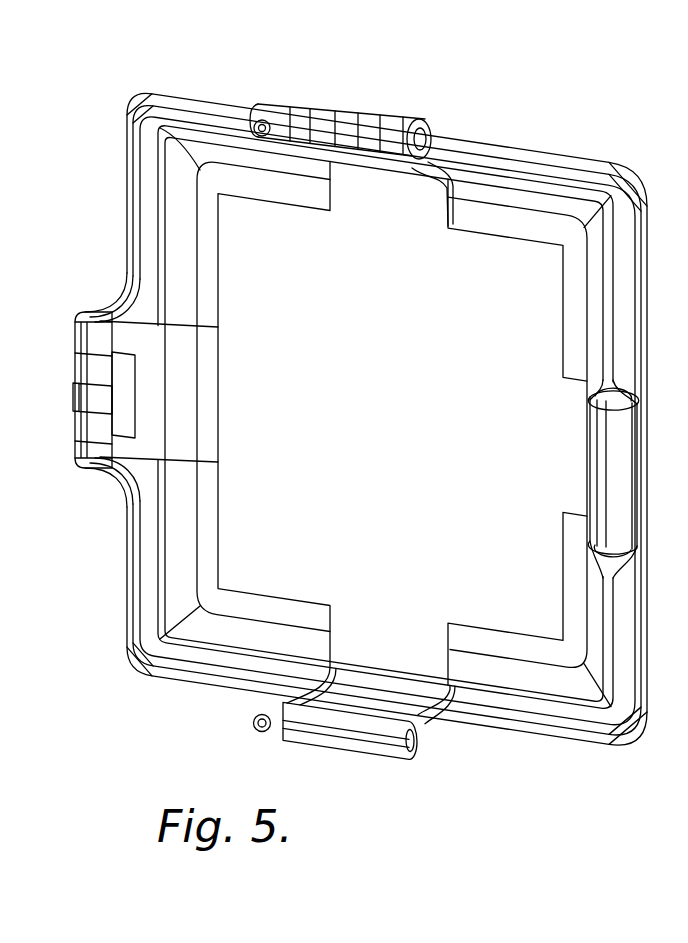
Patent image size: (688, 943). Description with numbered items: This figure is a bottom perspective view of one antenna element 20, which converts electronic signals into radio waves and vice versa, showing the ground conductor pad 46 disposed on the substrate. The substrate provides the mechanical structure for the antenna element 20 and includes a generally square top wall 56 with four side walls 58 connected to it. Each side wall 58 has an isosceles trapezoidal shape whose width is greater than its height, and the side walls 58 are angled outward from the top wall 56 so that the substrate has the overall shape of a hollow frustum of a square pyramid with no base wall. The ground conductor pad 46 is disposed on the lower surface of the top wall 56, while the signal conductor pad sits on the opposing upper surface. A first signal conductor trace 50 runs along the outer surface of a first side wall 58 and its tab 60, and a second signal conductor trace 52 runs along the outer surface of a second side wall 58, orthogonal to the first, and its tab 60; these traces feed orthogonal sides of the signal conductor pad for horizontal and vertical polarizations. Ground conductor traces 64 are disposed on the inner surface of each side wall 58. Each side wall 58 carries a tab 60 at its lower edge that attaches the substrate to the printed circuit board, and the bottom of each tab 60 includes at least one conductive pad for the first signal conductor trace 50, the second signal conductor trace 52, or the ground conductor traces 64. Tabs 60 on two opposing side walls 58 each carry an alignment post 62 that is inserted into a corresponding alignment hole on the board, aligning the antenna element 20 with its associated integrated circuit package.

The antenna element 20 is at (534, 127).
The ground conductor pad 46 is at (362, 439).
The first signal conductor trace 50 is at (355, 120).
The second signal conductor trace 52 is at (76, 396).
The top wall 56 is at (575, 653).
The side walls 58 is at (567, 178).
The tab 60 is at (98, 508).
The alignment post 62 is at (259, 123).
The ground conductor traces 64 is at (418, 179).